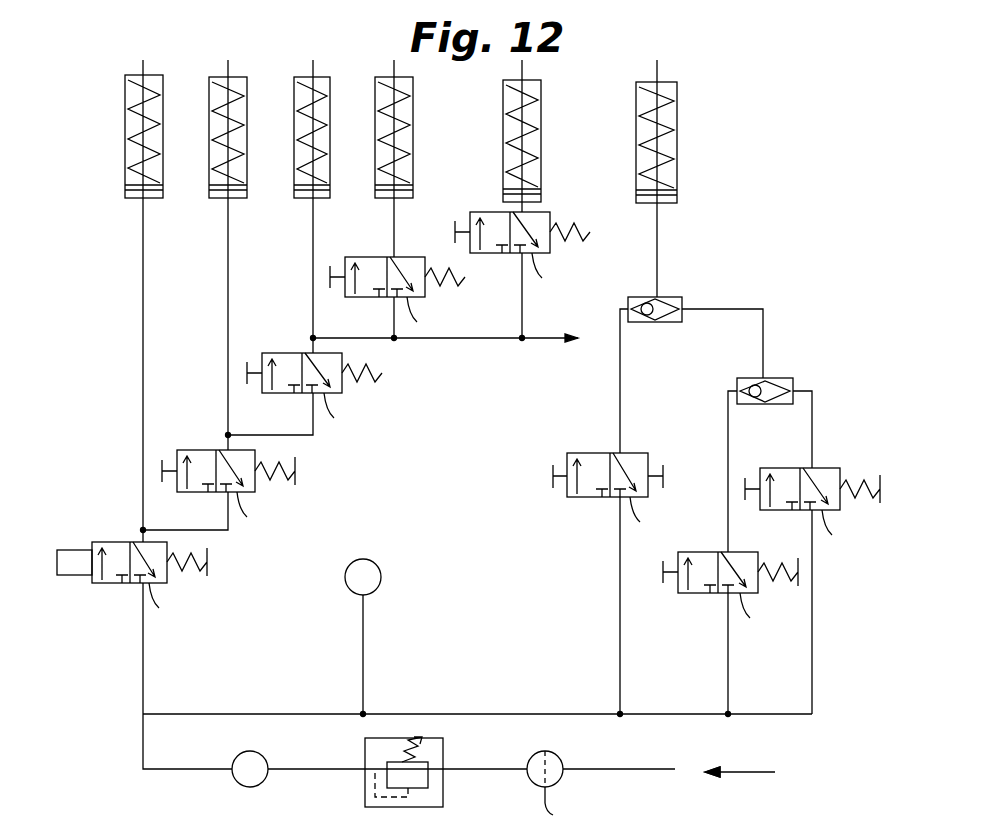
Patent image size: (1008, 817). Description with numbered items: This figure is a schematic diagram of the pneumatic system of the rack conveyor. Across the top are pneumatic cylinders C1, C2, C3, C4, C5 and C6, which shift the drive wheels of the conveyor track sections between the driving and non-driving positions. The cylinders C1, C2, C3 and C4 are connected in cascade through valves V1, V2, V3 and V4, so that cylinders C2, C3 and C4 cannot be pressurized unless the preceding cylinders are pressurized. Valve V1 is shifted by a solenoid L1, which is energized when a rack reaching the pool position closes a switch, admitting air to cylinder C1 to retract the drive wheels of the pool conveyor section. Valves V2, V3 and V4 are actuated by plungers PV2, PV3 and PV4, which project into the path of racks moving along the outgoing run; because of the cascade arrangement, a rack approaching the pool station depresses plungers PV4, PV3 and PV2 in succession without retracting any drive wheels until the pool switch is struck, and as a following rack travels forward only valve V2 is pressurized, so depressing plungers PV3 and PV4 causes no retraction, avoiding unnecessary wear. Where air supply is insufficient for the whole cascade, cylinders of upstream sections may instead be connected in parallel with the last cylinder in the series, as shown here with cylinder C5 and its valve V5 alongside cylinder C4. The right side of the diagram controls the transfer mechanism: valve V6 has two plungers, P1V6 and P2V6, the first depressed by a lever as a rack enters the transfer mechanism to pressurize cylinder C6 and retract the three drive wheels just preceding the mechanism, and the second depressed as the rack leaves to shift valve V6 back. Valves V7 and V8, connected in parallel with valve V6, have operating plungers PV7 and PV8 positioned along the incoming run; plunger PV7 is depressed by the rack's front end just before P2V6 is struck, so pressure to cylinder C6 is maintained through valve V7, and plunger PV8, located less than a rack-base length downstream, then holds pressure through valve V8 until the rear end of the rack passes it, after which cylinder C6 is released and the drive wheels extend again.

The pneumatic cylinder C1 is at (150, 73).
The pneumatic cylinder C2 is at (232, 77).
The pneumatic cylinder C3 is at (300, 77).
The pneumatic cylinder C4 is at (386, 77).
The cylinder C5 is at (530, 82).
The cylinder C6 is at (667, 82).
The valve V1 is at (108, 588).
The valve V2 is at (238, 497).
The valve V3 is at (318, 397).
The valve V4 is at (403, 302).
The valve V5 is at (497, 258).
The valve V6 is at (598, 500).
The valve V7 is at (700, 598).
The valve V8 is at (823, 516).
The solenoid L1 is at (72, 550).
The plunger PV2 is at (163, 445).
The plunger PV3 is at (250, 365).
The plunger PV4 is at (331, 264).
The plunger P1V6 is at (555, 462).
The plunger P2V6 is at (665, 464).
The operating plunger PV7 is at (665, 556).
The operating plunger PV8 is at (746, 479).